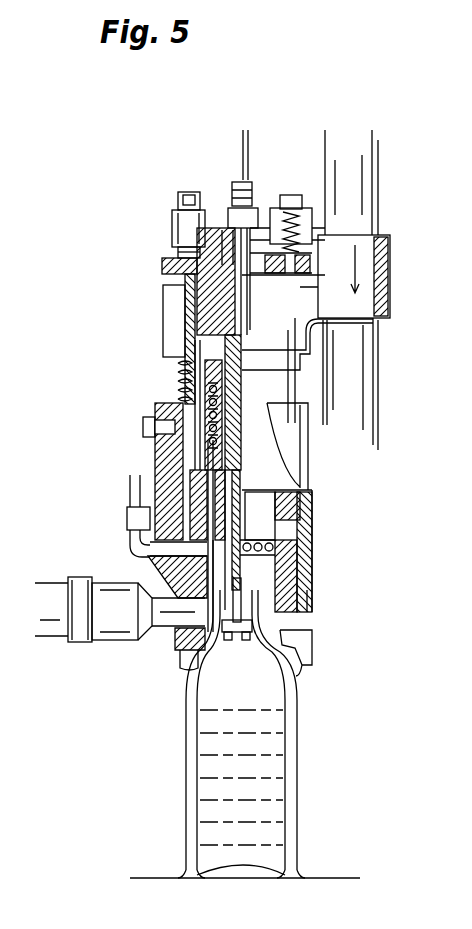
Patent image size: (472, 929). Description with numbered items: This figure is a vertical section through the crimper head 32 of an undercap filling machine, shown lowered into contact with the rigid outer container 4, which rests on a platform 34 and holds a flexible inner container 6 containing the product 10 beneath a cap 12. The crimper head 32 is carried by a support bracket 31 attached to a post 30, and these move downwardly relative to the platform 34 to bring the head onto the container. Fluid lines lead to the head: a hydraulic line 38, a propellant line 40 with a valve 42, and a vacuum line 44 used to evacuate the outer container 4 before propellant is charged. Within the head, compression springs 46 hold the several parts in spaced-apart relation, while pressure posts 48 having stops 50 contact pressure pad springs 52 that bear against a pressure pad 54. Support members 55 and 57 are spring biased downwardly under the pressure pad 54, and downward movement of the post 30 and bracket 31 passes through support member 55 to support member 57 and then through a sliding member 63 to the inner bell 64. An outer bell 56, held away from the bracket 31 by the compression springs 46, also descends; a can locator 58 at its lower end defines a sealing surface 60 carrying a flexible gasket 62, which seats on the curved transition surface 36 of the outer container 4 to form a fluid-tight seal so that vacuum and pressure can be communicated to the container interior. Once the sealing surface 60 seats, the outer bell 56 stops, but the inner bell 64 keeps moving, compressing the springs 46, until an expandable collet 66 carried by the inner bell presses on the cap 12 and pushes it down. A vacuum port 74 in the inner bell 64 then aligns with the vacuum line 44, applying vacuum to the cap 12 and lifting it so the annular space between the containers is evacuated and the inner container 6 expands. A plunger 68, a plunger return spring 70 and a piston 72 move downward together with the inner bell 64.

The rigid outer container 4 is at (302, 780).
The flexible inner container 6 is at (293, 731).
The product 10 is at (246, 777).
The cap 12 is at (195, 718).
The post 30 is at (383, 345).
The support bracket 31 is at (380, 243).
The crimper head 32 is at (158, 382).
The platform 34 is at (145, 875).
The curved transition surface 36 is at (232, 647).
The hydraulic line 38 is at (238, 172).
The propellant line 40 is at (158, 630).
The valve 42 is at (108, 640).
The vacuum line 44 is at (127, 518).
The compression springs 46 is at (178, 367).
The pressure posts 48 is at (178, 200).
The stops 50 is at (172, 215).
The pressure pad springs 52 is at (180, 250).
The pressure pad 54 is at (165, 264).
The support member 55 is at (185, 298).
The outer bell 56 is at (312, 579).
The support member 57 is at (180, 385).
The can locator 58 is at (305, 666).
The sealing surface 60 is at (290, 649).
The flexible gasket 62 is at (290, 632).
The sliding member 63 is at (222, 483).
The inner bell 64 is at (212, 512).
The expandable collet 66 is at (190, 585).
The plunger 68 is at (268, 565).
The plunger return spring 70 is at (226, 416).
The piston 72 is at (197, 338).
The vacuum port 74 is at (230, 542).